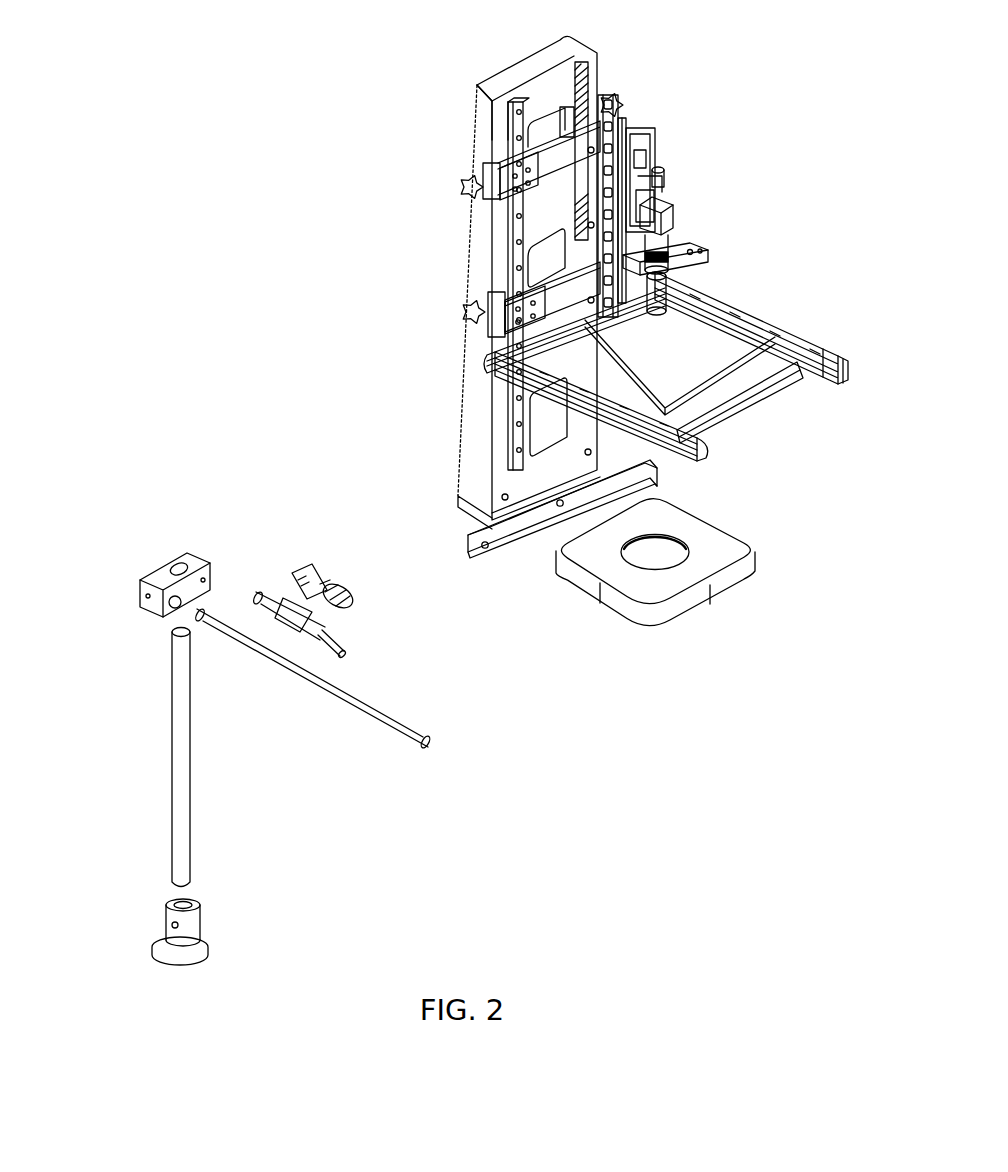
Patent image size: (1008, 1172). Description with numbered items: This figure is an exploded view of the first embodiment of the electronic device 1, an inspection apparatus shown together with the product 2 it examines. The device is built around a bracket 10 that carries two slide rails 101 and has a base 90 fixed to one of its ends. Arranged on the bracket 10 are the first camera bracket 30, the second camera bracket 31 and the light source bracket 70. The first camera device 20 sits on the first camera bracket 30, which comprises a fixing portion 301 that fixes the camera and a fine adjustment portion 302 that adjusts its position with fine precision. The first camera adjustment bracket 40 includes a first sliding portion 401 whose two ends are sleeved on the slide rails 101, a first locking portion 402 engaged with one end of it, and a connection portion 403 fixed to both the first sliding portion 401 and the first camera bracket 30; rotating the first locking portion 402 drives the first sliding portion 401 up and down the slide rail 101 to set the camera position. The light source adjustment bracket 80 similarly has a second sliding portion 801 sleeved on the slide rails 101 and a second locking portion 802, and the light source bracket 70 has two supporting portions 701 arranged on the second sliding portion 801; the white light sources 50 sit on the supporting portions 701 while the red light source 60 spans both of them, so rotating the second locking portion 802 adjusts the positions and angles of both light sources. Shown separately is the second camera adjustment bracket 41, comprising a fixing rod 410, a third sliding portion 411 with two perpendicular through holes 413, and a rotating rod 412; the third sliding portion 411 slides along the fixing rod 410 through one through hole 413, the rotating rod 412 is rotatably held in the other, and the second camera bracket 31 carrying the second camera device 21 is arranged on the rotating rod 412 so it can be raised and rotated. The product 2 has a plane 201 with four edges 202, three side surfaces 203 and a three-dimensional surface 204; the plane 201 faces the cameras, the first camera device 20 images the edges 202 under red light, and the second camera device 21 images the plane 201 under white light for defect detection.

The electronic device 1 is at (418, 52).
The product 2 is at (757, 533).
The bracket 10 is at (576, 38).
The slide rail 101 is at (497, 140).
The first camera device 20 is at (668, 246).
The second camera device 21 is at (318, 575).
The first camera bracket 30 is at (776, 120).
The fixing portion 301 is at (647, 142).
The fine adjustment portion 302 is at (652, 182).
The second camera bracket 31 is at (320, 645).
The first camera adjustment bracket 40 is at (757, 56).
The first sliding portion 401 is at (609, 93).
The first locking portion 402 is at (620, 110).
The connection portion 403 is at (628, 126).
The second camera adjustment bracket 41 is at (128, 710).
The fixing rod 410 is at (175, 812).
The third sliding portion 411 is at (150, 578).
The rotating rod 412 is at (385, 715).
The through hole 413 is at (176, 558).
The white light source 50 is at (800, 383).
The red light source 60 is at (743, 413).
The light source bracket 70 is at (770, 297).
The supporting portion 701 is at (848, 366).
The light source adjustment bracket 80 is at (335, 298).
The second sliding portion 801 is at (470, 325).
The second locking portion 802 is at (460, 318).
The base 90 is at (482, 540).
The plane 201 is at (675, 587).
The edge 202 is at (697, 510).
The side surface 203 is at (633, 613).
The 3D surface 204 is at (597, 603).